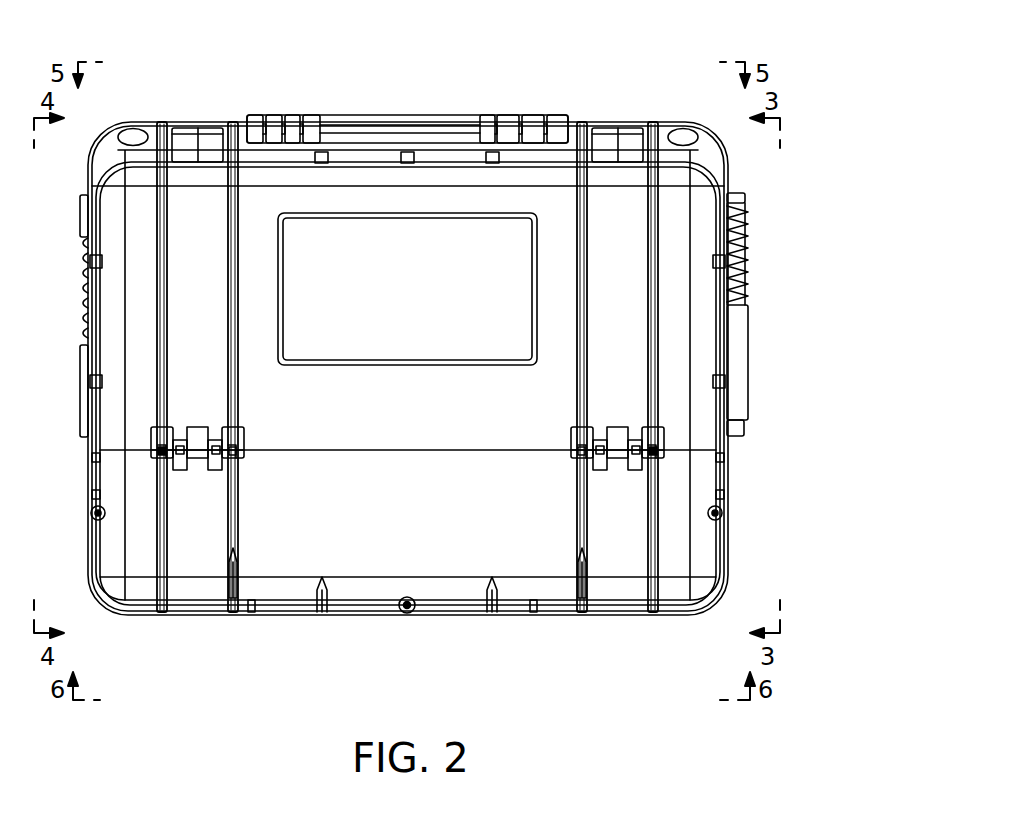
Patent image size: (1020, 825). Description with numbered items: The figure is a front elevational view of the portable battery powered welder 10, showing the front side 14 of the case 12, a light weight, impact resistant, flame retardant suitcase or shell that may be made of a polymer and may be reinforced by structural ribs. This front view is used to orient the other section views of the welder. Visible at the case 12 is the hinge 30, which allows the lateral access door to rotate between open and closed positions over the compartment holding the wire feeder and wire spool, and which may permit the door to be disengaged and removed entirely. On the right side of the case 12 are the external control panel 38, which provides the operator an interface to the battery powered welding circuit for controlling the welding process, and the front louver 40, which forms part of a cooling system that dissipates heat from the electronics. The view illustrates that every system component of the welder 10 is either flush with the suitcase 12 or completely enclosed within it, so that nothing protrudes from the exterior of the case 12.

The portable battery powered welder 10 is at (628, 62).
The case 12 is at (730, 540).
The front side 14 is at (422, 496).
The hinge 30 is at (178, 468).
The external control panel 38 is at (750, 368).
The front louver 40 is at (745, 248).